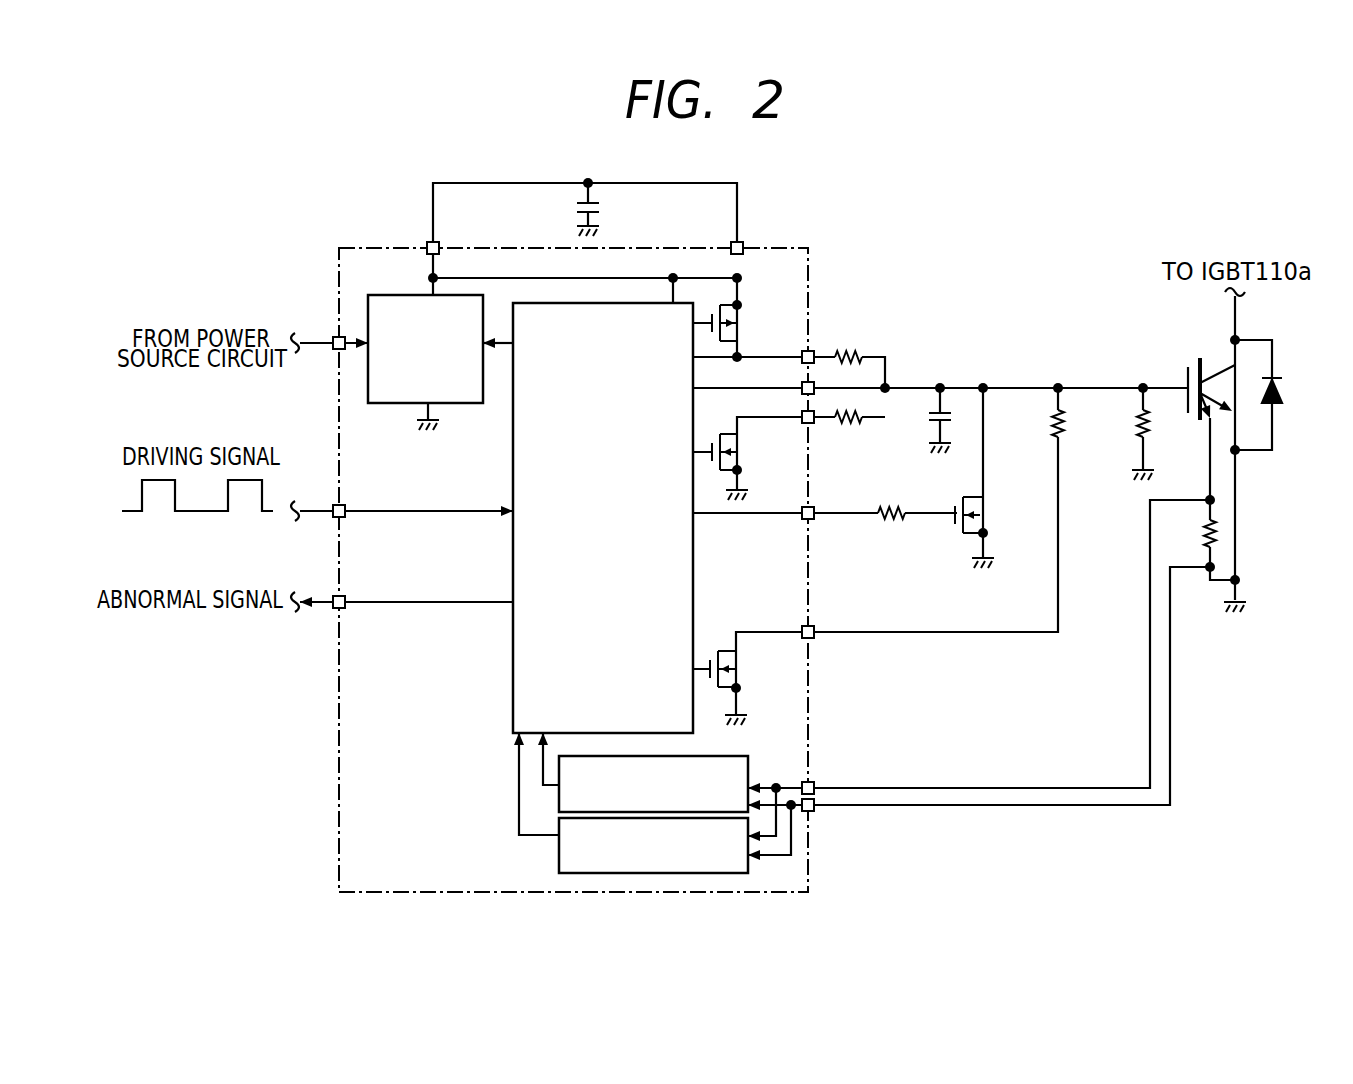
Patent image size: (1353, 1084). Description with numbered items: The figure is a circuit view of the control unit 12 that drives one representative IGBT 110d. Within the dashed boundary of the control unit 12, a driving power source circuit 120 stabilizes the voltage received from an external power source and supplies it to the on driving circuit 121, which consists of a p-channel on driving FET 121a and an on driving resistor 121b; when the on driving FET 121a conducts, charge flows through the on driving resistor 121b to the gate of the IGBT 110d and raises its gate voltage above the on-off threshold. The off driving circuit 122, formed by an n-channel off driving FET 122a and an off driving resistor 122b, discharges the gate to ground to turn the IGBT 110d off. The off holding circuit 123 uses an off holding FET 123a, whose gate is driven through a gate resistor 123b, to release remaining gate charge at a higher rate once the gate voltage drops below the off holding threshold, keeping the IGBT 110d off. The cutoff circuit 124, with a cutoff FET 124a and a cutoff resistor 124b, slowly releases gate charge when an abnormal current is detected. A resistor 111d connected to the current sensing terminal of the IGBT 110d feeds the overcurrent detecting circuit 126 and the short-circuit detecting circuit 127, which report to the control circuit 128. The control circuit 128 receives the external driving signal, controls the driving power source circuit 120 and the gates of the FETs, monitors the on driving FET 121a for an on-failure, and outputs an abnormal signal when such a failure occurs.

The control unit 12 is at (778, 182).
The driving power source circuit 120 is at (387, 405).
The on driving circuit 121 is at (790, 308).
The on driving FET 121a is at (772, 312).
The on driving resistor 121b is at (849, 350).
The off driving circuit 122 is at (793, 456).
The off driving FET 122a is at (772, 453).
The off driving resistor 122b is at (847, 426).
The off holding circuit 123 is at (913, 499).
The off holding FET 123a is at (950, 533).
The gate resistor 123b is at (887, 520).
The cutoff circuit 124 is at (878, 556).
The cutoff FET 124a is at (772, 666).
The cutoff resistor 124b is at (1046, 420).
The overcurrent detecting circuit 126 is at (731, 756).
The short-circuit detecting circuit 127 is at (557, 857).
The control circuit 128 is at (513, 474).
The IGBT 110d is at (1197, 364).
The resistor 111d is at (1198, 547).